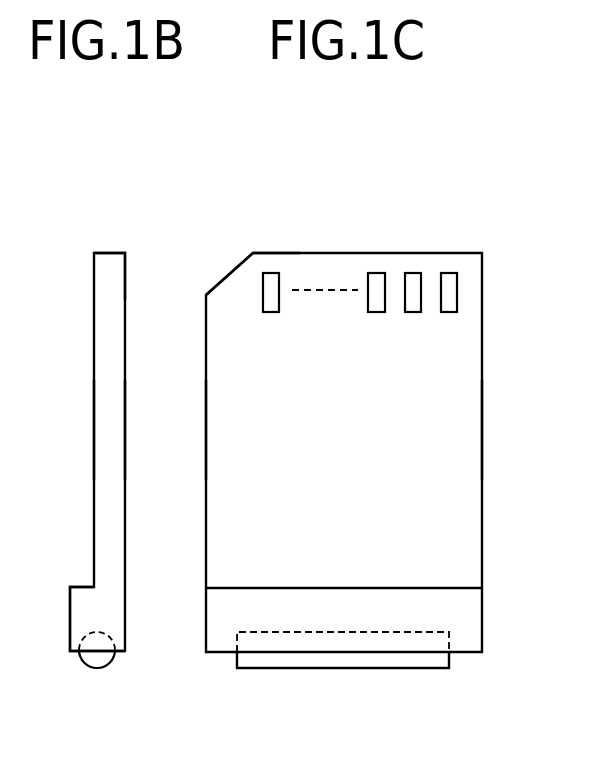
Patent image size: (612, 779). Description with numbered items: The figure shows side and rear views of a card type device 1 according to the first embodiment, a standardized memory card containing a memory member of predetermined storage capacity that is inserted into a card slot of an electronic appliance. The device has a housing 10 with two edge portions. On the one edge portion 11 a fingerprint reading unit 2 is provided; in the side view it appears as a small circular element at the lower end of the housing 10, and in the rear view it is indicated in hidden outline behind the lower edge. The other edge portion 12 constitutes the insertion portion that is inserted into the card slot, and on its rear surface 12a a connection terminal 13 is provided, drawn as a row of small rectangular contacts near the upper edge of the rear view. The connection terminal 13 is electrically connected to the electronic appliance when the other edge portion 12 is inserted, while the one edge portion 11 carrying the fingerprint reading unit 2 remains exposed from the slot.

In FIG. 1B, the card type device 1 is at (120, 230).
In FIG. 1C, the card type device 1 is at (385, 230).
In FIG. 1B, the fingerprint reading unit 2 is at (104, 679).
In FIG. 1C, the fingerprint reading unit 2 is at (347, 679).
In FIG. 1B, the housing 10 is at (100, 432).
In FIG. 1C, the housing 10 is at (215, 432).
In FIG. 1B, the one edge portion 11 is at (92, 612).
In FIG. 1C, the one edge portion 11 is at (215, 612).
In FIG. 1B, the other edge portion 12 is at (86, 282).
In FIG. 1C, the other edge portion 12 is at (202, 280).
In FIG. 1C, the rear surface 12a is at (462, 427).
In FIG. 1C, the connection terminal 13 is at (449, 273).